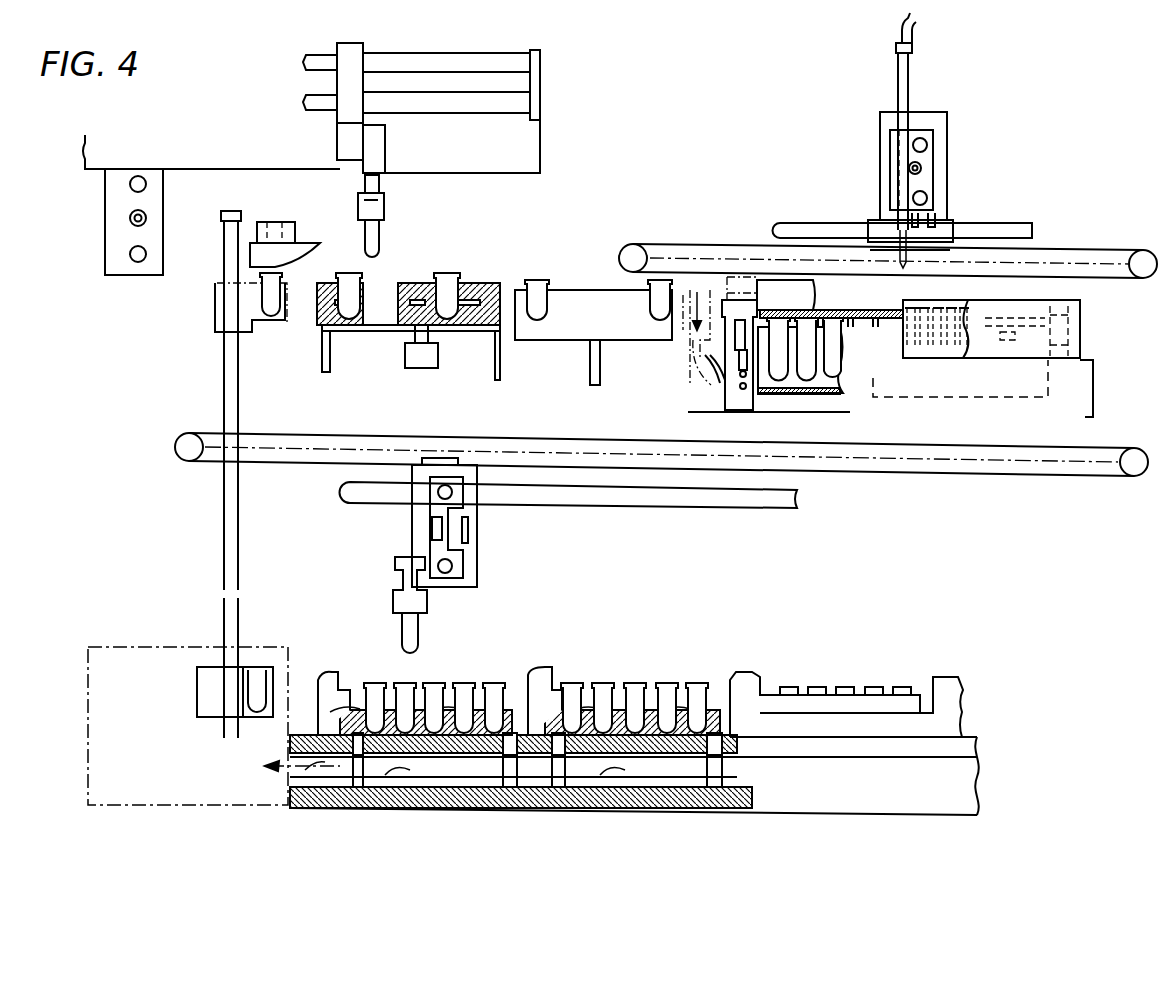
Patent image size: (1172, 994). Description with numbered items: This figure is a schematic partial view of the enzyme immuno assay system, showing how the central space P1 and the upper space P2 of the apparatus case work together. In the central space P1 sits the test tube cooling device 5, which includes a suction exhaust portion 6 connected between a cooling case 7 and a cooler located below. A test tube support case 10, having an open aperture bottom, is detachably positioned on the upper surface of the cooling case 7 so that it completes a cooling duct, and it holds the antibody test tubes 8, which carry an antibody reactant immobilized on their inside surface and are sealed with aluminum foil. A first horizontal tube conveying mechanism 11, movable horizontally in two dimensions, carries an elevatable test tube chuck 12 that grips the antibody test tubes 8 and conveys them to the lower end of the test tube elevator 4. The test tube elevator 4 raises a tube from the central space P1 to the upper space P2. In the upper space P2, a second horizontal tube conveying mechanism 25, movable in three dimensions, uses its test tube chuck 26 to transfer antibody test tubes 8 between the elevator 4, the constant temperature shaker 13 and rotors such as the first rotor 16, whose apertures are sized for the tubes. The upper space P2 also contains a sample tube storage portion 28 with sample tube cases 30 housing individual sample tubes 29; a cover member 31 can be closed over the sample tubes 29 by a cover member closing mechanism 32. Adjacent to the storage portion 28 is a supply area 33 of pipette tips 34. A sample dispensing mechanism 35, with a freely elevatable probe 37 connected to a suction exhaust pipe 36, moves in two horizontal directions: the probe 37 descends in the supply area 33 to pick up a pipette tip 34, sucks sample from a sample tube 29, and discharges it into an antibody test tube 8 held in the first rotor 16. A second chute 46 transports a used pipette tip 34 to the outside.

The test tube elevator 4 is at (221, 526).
The test tube cooling device 5 is at (313, 834).
The suction exhaust portion 6 is at (240, 807).
The cooling case 7 is at (348, 807).
The antibody test tubes 8 is at (266, 290).
The test tube support case 10 is at (722, 695).
The first horizontal tube conveying mechanism 11 is at (400, 530).
The test tube chuck 12 is at (430, 598).
The constant temperature shaker 13 is at (318, 332).
The first rotor 16 is at (567, 278).
The second horizontal tube conveying mechanism 25 is at (460, 62).
The test tube chuck 26 is at (385, 212).
The sample tube storage portion 28 is at (902, 220).
The sample tubes 29 is at (826, 395).
The sample tube case 30 is at (769, 396).
The cover member 31 is at (888, 237).
The cover member closing mechanism 32 is at (743, 388).
The supply area of pipette tips 33 is at (1008, 298).
The pipette tips 34 is at (950, 330).
The sample dispensing mechanism 35 is at (953, 130).
The suction exhaust pipe 36 is at (902, 28).
The probe 37 is at (890, 215).
The second chute 46 is at (704, 298).
The central space P1 is at (1005, 561).
The upper space P2 is at (1063, 292).